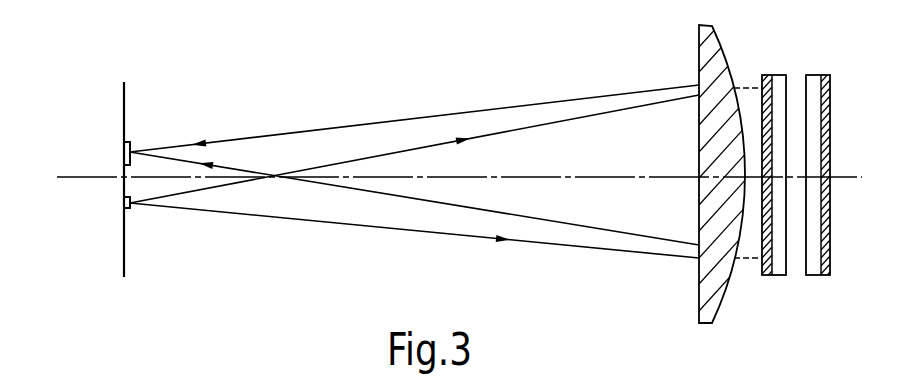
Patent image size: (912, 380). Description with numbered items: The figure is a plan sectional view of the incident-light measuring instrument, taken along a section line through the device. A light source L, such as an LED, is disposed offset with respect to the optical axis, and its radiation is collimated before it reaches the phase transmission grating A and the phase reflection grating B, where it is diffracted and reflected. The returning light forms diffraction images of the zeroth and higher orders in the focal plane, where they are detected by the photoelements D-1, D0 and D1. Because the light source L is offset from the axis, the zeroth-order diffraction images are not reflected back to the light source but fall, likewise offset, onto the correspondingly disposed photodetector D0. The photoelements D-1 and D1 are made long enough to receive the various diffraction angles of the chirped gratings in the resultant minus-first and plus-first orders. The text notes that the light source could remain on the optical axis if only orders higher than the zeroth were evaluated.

The photoelement D0 is at (124, 155).
The photoelement D1 is at (91, 100).
The photoelement D-1 is at (91, 122).
The light source L is at (130, 208).
The phase transmission grating A is at (775, 276).
The phase reflection grating B is at (812, 276).